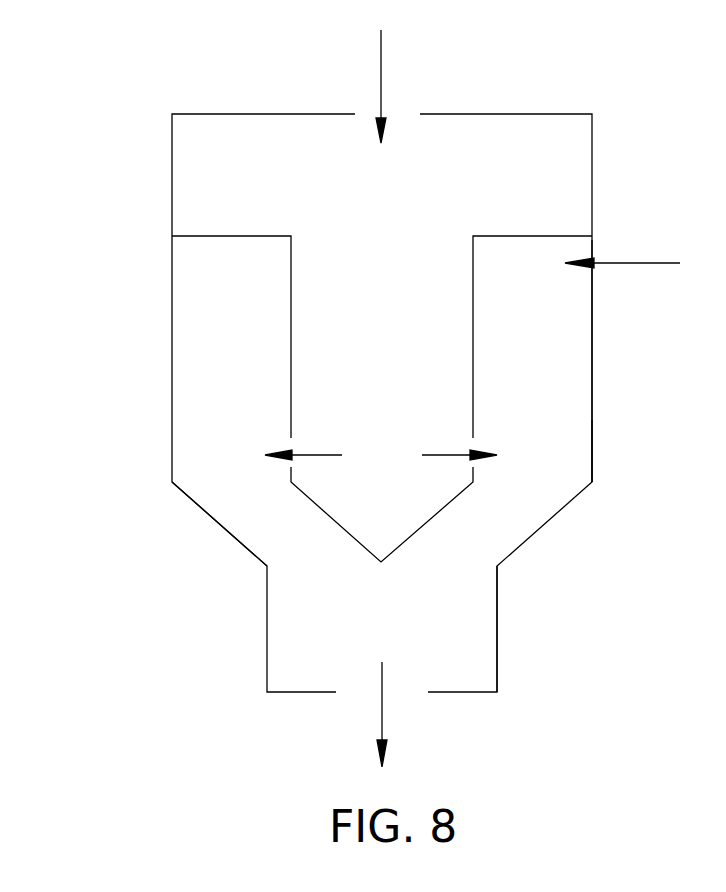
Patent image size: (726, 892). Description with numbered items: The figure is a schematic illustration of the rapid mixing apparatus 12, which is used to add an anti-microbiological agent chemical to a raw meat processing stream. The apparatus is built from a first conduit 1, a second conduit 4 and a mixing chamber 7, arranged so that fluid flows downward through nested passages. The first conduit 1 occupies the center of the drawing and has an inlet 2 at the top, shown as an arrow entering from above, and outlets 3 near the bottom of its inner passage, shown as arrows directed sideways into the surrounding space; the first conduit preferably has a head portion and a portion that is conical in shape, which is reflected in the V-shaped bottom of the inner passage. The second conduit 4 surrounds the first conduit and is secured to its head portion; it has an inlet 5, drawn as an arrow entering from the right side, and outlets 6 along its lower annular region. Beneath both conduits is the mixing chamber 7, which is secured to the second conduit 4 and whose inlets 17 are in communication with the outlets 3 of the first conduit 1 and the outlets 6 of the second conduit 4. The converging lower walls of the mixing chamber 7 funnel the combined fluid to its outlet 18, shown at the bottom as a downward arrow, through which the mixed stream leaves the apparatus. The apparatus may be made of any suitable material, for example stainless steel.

The first conduit 1 is at (450, 160).
The inlets of the first conduit 2 is at (380, 74).
The outlets of the first conduit 3 is at (290, 438).
The second conduit 4 is at (550, 346).
The inlets of the second conduit 5 is at (592, 240).
The outlets of the second conduit 6 is at (570, 460).
The mixing chamber 7 is at (442, 580).
The rapid mixing apparatus 12 is at (172, 278).
The inlets of the mixing chamber 17 is at (278, 524).
The outlets of the mixing chamber 18 is at (383, 718).